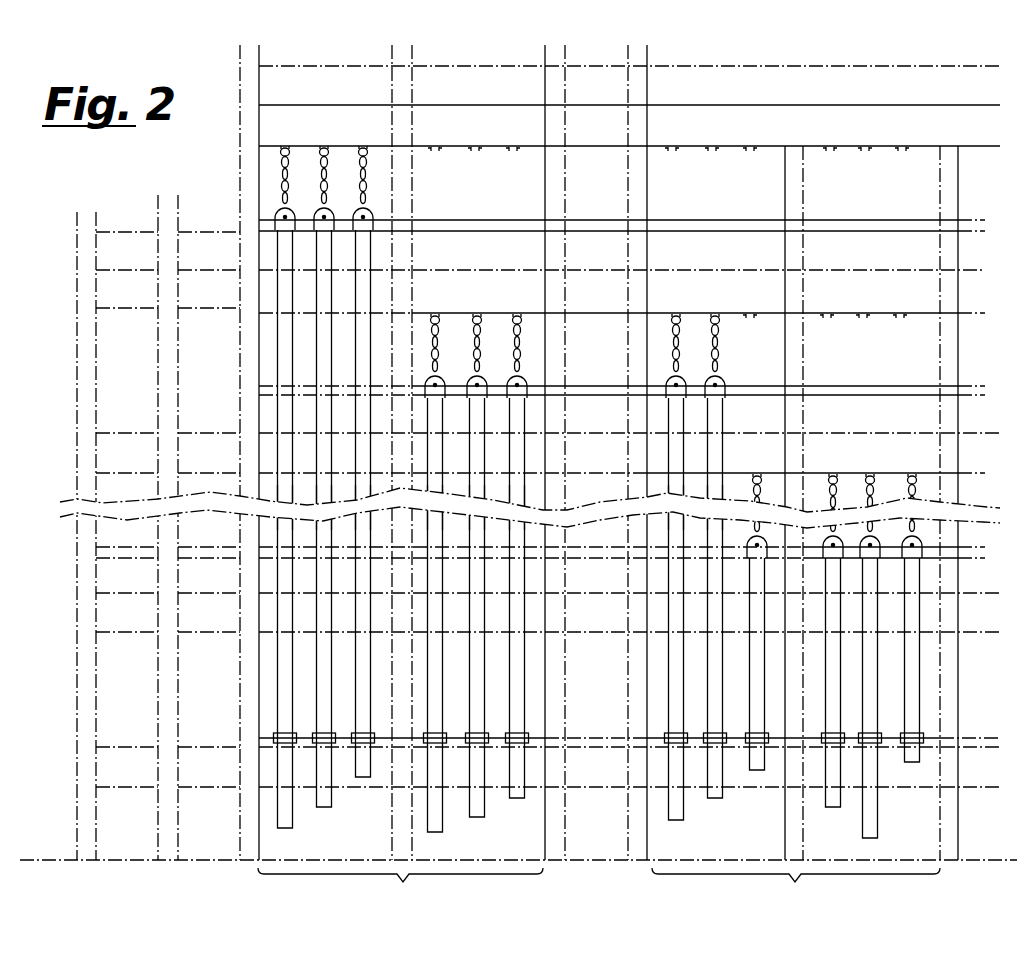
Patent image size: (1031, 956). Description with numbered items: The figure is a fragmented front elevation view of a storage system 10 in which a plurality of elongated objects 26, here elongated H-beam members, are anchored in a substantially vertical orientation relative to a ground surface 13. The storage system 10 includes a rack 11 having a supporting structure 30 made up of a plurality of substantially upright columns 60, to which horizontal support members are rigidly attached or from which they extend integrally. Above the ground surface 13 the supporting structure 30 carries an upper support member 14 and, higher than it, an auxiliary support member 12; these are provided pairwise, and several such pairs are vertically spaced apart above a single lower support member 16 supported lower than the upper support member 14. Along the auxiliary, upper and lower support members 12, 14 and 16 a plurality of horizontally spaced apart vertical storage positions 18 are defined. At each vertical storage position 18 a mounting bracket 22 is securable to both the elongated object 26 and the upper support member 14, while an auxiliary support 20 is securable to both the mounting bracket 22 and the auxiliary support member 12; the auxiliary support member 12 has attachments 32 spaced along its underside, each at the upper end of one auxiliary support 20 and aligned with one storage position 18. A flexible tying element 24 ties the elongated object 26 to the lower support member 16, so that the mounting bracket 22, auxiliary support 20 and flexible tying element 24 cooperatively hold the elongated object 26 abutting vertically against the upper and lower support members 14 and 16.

The storage system 10 is at (133, 203).
The rack 11 is at (510, 217).
The auxiliary support member 12 is at (445, 135).
The ground surface 13 is at (38, 858).
The upper support member 14 is at (452, 255).
The lower support member 16 is at (360, 748).
The vertical storage position 18 is at (287, 140).
The auxiliary support 20 is at (318, 181).
The mounting bracket 22 is at (282, 229).
The flexible tying element 24 is at (289, 745).
The elongated object 26 is at (275, 322).
The supporting structure 30 is at (238, 143).
The attachment 32 is at (434, 150).
The upright column 60 is at (240, 175).